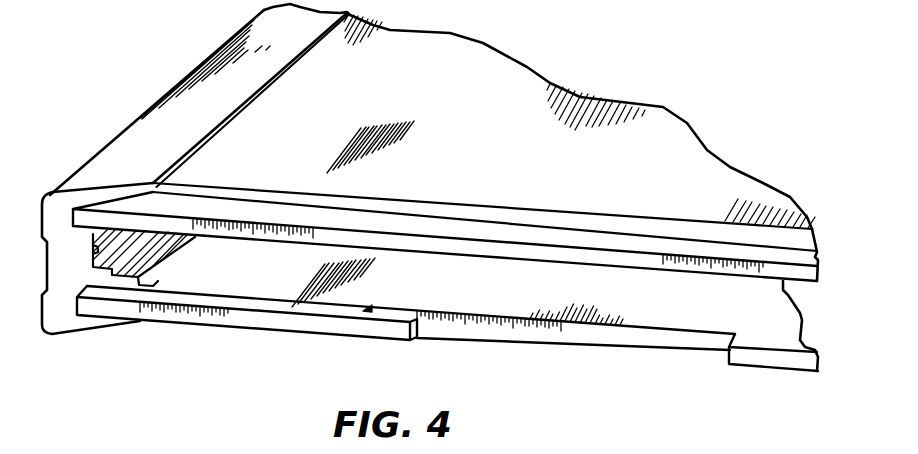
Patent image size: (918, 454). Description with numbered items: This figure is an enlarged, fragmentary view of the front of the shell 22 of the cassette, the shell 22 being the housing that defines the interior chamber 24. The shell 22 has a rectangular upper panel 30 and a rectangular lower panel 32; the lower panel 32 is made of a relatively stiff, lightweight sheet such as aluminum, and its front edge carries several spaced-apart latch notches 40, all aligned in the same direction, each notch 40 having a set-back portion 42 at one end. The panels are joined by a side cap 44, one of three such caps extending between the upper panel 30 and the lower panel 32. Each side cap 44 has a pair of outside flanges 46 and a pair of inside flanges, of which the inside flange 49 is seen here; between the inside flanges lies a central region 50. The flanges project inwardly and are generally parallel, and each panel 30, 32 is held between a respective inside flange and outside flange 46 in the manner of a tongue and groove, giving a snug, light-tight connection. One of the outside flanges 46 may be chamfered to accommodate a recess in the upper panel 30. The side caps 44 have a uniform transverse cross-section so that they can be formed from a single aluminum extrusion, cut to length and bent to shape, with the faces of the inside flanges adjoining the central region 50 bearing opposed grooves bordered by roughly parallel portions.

The shell 22 is at (588, 71).
The chamber 24 is at (752, 286).
The upper panel 30 is at (514, 164).
The lower panel 32 is at (272, 265).
The latch notches 40 is at (668, 343).
The set-back portion 42 is at (411, 312).
The side cap 44 is at (200, 64).
The outside flanges 46 is at (148, 117).
The inside flange 49 is at (158, 283).
The central region 50 is at (93, 257).